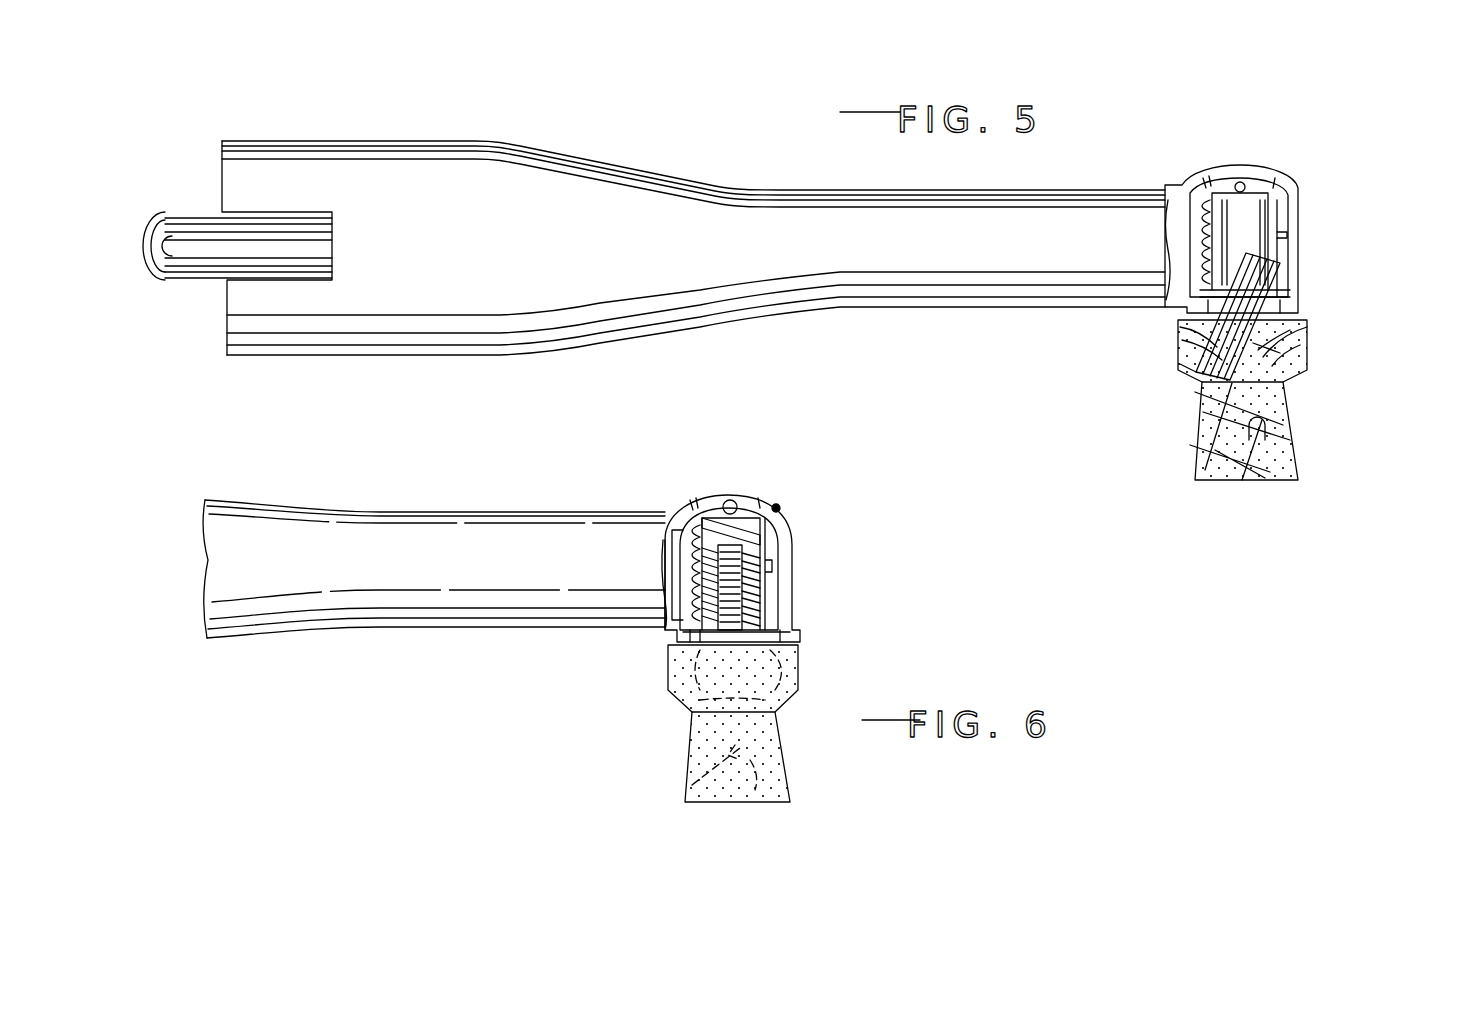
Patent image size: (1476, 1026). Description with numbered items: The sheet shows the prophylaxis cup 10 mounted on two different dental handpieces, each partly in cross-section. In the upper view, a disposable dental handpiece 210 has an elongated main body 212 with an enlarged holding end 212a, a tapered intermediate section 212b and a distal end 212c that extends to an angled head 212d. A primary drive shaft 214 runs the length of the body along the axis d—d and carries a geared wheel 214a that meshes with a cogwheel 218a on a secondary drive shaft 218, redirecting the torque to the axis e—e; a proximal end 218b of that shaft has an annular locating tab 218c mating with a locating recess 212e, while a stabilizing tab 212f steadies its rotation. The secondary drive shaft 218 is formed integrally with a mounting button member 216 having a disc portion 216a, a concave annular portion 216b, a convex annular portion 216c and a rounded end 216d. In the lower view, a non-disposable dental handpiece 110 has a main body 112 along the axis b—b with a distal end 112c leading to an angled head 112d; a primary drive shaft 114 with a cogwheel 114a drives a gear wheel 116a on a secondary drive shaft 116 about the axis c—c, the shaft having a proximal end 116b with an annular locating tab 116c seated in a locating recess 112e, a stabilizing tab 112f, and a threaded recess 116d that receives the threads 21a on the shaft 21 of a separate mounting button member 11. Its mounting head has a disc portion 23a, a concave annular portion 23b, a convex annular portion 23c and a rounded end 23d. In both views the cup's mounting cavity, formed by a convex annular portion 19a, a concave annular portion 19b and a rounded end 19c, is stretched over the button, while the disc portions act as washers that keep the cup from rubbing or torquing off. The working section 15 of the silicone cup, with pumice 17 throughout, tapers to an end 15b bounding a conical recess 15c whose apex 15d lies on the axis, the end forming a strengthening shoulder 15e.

In FIG. 5, the prophylaxis cup 10 is at (1322, 490).
In FIG. 6, the prophylaxis cup 10 is at (672, 733).
In FIG. 6, the mounting button member 11 is at (762, 634).
In FIG. 5, the working section 15 is at (1300, 455).
In FIG. 6, the working section 15 is at (722, 748).
In FIG. 5, the end of working section 15b is at (1300, 475).
In FIG. 6, the end of working section 15b is at (785, 784).
In FIG. 5, the conical recess 15c is at (1272, 483).
In FIG. 6, the conical recess 15c is at (752, 803).
In FIG. 5, the apex of recess 15d is at (1257, 483).
In FIG. 6, the apex of recess 15d is at (790, 768).
In FIG. 5, the shoulder 15e is at (1205, 483).
In FIG. 6, the shoulder 15e is at (692, 803).
In FIG. 5, the pumice 17 is at (1205, 455).
In FIG. 6, the pumice 17 is at (692, 797).
In FIG. 5, the convex annular portion of mounting cavity 19a is at (1185, 335).
In FIG. 6, the convex annular portion of mounting cavity 19a is at (700, 655).
In FIG. 5, the concave annular portion of mounting cavity 19b is at (1200, 365).
In FIG. 6, the concave annular portion of mounting cavity 19b is at (668, 678).
In FIG. 5, the rounded end of mounting cavity 19c is at (1205, 415).
In FIG. 6, the rounded end of mounting cavity 19c is at (690, 710).
In FIG. 6, the shaft 21 is at (765, 588).
In FIG. 6, the threads 21a is at (758, 527).
In FIG. 6, the disc portion 23a is at (800, 658).
In FIG. 6, the concave annular portion of mounting head 23b is at (780, 650).
In FIG. 6, the convex annular portion of mounting head 23c is at (782, 690).
In FIG. 6, the rounded end of mounting head 23d is at (780, 717).
In FIG. 6, the non-disposable dental handpiece 110 is at (885, 422).
In FIG. 6, the elongated main body 112 is at (332, 496).
In FIG. 6, the distal end 112c is at (445, 535).
In FIG. 6, the angled head 112d is at (693, 497).
In FIG. 6, the locating recess 112e is at (731, 500).
In FIG. 6, the stabilizing tab 112f is at (772, 557).
In FIG. 6, the primary drive shaft 114 is at (672, 557).
In FIG. 6, the cogwheel 114a is at (672, 520).
In FIG. 6, the secondary drive shaft 116 is at (762, 515).
In FIG. 6, the gear wheel 116a is at (790, 605).
In FIG. 6, the proximal end of secondary shaft 116b is at (753, 523).
In FIG. 6, the annular locating tab 116c is at (735, 505).
In FIG. 6, the threaded recess 116d is at (705, 575).
In FIG. 5, the disposable dental handpiece 210 is at (1382, 82).
In FIG. 5, the elongated main body 212 is at (785, 178).
In FIG. 5, the enlarged holding end 212a is at (378, 175).
In FIG. 5, the tapered intermediate section 212b is at (708, 212).
In FIG. 5, the distal end 212c is at (943, 228).
In FIG. 5, the angled head 212d is at (1290, 200).
In FIG. 5, the locating recess 212e is at (1233, 187).
In FIG. 5, the stabilizing tab 212f is at (1288, 236).
In FIG. 5, the primary drive shaft 214 is at (192, 246).
In FIG. 5, the geared wheel 214a is at (1196, 185).
In FIG. 5, the mounting button member 216 is at (1305, 362).
In FIG. 5, the disc portion 216a is at (1300, 330).
In FIG. 5, the concave annular portion 216b is at (1295, 350).
In FIG. 5, the convex annular portion 216c is at (1300, 380).
In FIG. 5, the rounded end 216d is at (1292, 420).
In FIG. 5, the secondary drive shaft 218 is at (1290, 210).
In FIG. 5, the cogwheel 218a is at (1305, 275).
In FIG. 5, the proximal end of secondary drive shaft 218b is at (1255, 192).
In FIG. 5, the annular locating tab 218c is at (1245, 185).
In FIG. 6, the axis b— b is at (205, 568).
In FIG. 6, the axis c— c is at (728, 478).
In FIG. 5, the axis d— d is at (135, 246).
In FIG. 5, the axis e— e is at (1238, 157).